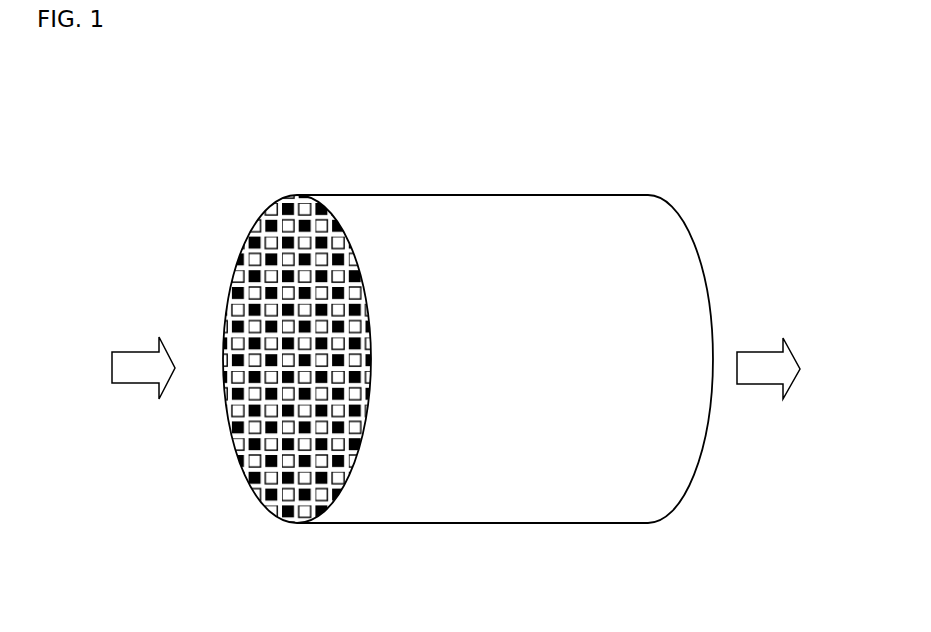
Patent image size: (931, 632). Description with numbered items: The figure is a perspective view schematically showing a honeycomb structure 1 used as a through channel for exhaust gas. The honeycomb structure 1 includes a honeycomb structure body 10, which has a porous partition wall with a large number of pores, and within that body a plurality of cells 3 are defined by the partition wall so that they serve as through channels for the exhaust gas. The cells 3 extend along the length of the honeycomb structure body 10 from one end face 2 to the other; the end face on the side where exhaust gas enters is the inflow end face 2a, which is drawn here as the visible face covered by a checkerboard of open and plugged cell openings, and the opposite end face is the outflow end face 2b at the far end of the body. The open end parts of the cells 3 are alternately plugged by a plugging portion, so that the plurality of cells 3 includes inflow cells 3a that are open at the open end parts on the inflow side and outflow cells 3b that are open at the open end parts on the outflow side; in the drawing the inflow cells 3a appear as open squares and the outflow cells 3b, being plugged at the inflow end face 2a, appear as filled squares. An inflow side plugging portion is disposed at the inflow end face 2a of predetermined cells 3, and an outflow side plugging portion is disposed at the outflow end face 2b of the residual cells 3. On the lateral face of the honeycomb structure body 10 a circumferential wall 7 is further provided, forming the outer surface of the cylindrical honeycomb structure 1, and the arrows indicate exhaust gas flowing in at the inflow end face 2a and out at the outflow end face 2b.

The honeycomb structure 1 is at (606, 148).
The end face 2 is at (501, 328).
The inflow end face 2a is at (333, 218).
The outflow end face 2b is at (703, 447).
The cells 3 is at (241, 360).
The inflow cells 3a is at (240, 277).
The outflow cells 3b is at (236, 293).
The circumferential wall 7 is at (550, 502).
The honeycomb structure body 10 is at (275, 503).